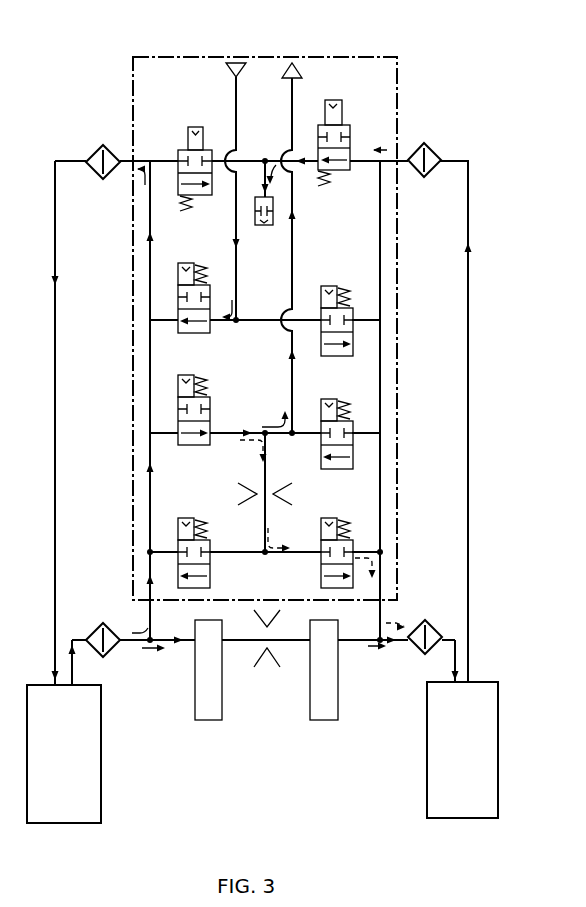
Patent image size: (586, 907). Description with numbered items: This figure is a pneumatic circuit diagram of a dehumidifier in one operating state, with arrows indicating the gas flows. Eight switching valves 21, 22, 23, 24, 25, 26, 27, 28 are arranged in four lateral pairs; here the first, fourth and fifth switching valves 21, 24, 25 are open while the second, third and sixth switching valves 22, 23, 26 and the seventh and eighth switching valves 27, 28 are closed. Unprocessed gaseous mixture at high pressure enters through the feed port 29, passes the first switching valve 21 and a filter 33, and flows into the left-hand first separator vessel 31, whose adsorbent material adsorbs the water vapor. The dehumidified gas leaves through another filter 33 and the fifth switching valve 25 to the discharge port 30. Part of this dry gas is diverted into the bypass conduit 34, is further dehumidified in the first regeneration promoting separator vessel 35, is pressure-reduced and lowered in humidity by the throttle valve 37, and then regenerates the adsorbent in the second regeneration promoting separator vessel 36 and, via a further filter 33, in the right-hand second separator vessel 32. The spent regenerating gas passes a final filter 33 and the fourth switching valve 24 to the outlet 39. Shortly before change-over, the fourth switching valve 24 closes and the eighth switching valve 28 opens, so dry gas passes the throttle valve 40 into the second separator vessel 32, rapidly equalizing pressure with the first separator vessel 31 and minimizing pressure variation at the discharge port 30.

The first switching valve 21 is at (182, 262).
The second switching valve 22 is at (328, 286).
The third switching valve 23 is at (192, 127).
The fourth switching valve 24 is at (333, 100).
The fifth switching valve 25 is at (188, 368).
The sixth switching valve 26 is at (330, 399).
The seventh switching valve 27 is at (185, 518).
The eighth switching valve 28 is at (330, 518).
The feed port 29 is at (236, 63).
The discharge port 30 is at (292, 63).
The first separator vessel 31 is at (93, 763).
The second separator vessel 32 is at (493, 765).
The filter 33 is at (98, 150).
The bypass conduit 34 is at (177, 648).
The first regeneration promoting separator vessel 35 is at (210, 720).
The second regeneration promoting separator vessel 36 is at (326, 720).
The throttle valve 37 is at (265, 670).
The outlet 39 is at (260, 225).
The throttle valve 40 is at (271, 487).